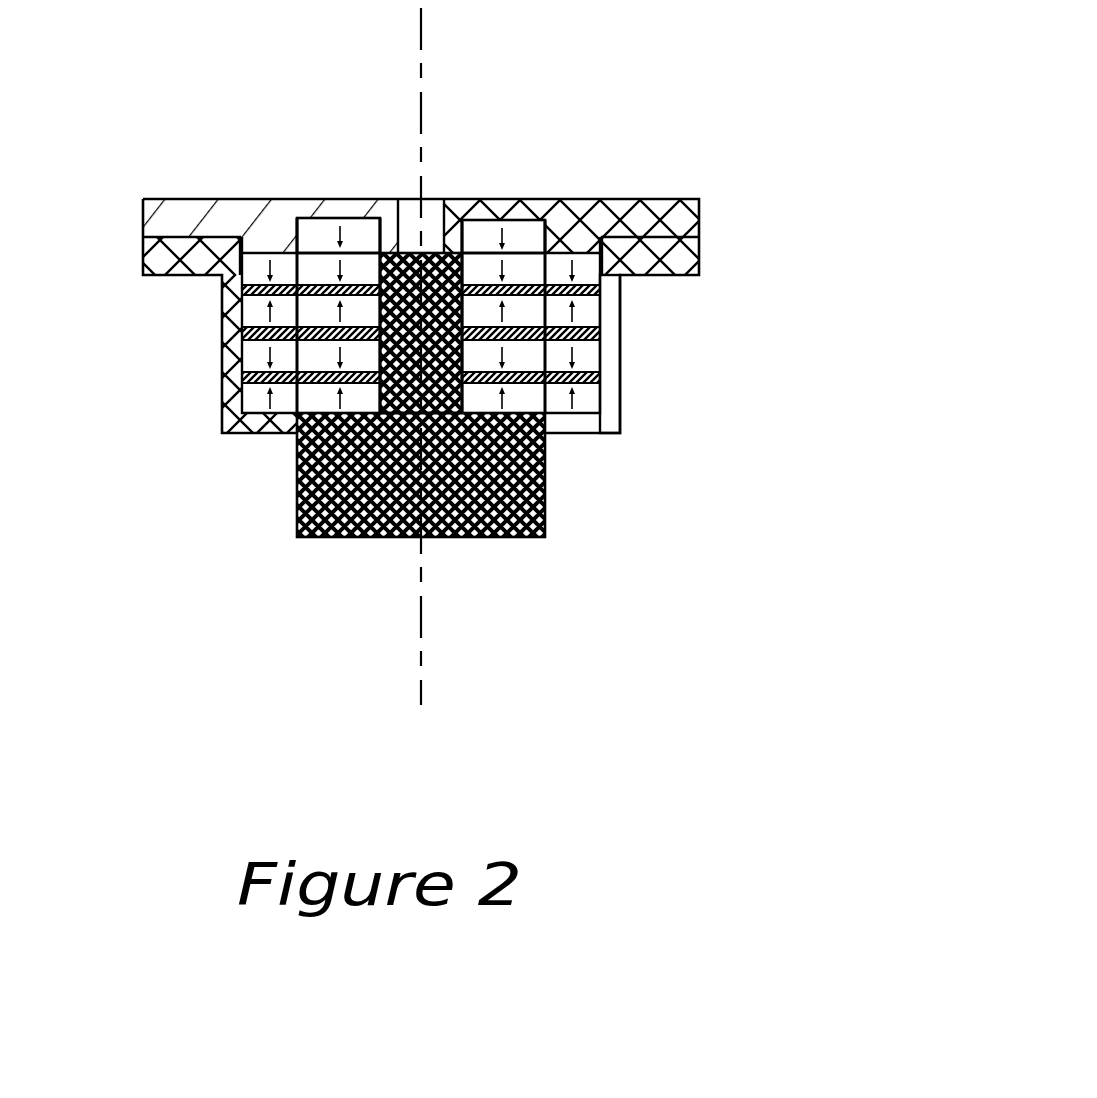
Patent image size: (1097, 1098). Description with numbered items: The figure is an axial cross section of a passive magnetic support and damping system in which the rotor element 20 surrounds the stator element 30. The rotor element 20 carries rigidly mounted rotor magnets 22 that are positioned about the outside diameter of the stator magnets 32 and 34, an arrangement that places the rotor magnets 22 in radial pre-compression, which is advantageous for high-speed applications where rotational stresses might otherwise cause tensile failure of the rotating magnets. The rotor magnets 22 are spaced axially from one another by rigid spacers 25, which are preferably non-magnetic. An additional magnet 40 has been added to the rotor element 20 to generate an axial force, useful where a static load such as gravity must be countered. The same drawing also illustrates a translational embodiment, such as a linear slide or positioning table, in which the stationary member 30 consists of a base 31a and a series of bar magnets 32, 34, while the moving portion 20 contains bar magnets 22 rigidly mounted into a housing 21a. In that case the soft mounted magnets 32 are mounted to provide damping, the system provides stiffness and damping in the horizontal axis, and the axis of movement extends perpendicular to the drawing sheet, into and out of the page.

The rotor element 20 is at (635, 319).
The housing 21a is at (613, 368).
The rotor magnets 22 is at (284, 405).
The rigid spacers 25 is at (222, 365).
The stator element 30 is at (322, 560).
The base 31a is at (483, 517).
The stator magnets 32 is at (528, 362).
The stator magnets 34 is at (510, 393).
The additional magnet 40 is at (358, 232).